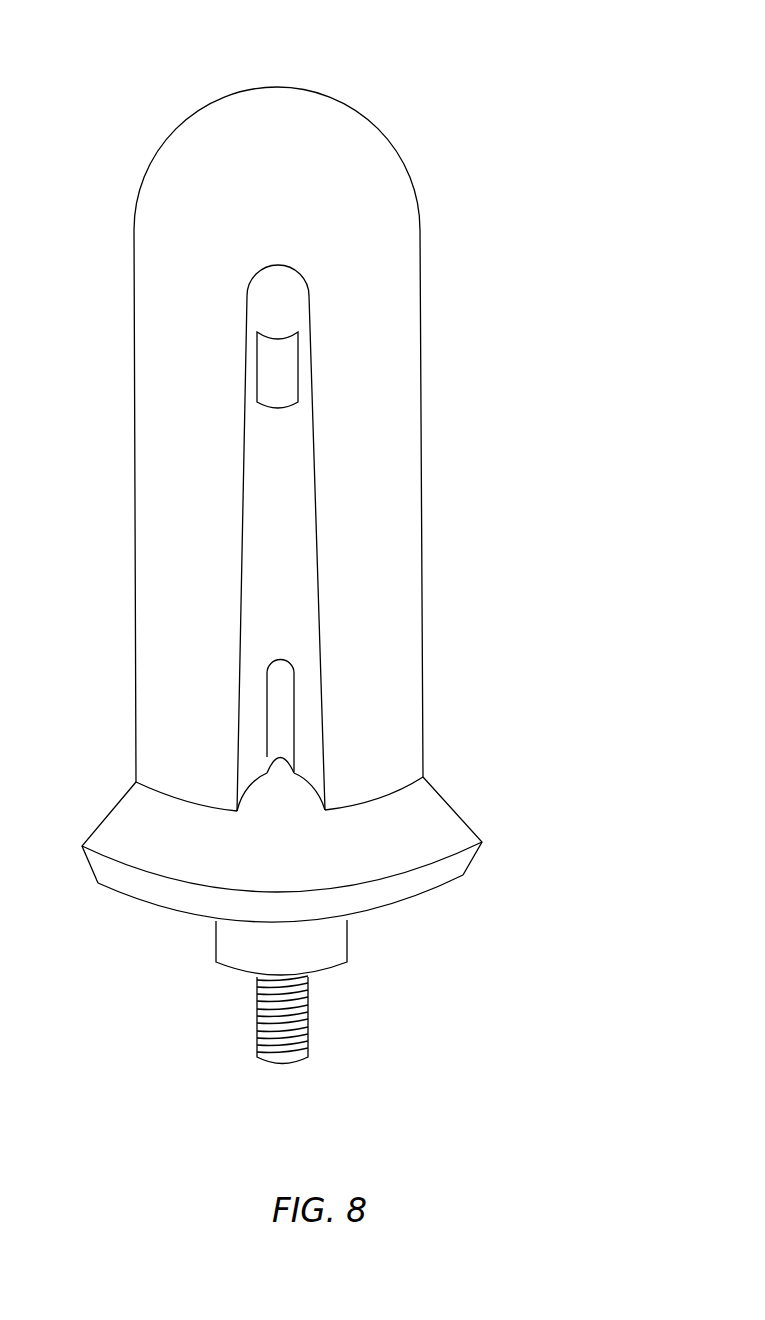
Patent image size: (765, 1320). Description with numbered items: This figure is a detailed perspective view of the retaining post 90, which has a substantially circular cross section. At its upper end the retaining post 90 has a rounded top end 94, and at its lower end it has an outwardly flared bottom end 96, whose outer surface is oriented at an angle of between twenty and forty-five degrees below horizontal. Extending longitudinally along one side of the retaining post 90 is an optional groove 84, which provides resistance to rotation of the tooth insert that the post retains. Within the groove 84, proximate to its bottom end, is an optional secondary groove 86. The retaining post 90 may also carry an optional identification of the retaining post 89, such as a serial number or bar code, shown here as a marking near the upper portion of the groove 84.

The retaining post 90 is at (412, 89).
The rounded top end 94 is at (204, 105).
The groove 84 is at (302, 508).
The identification of the retaining post 89 is at (260, 362).
The secondary groove 86 is at (295, 690).
The outwardly flared bottom end 96 is at (447, 800).